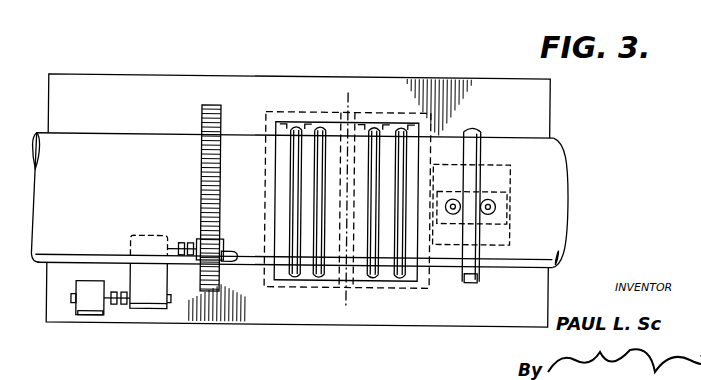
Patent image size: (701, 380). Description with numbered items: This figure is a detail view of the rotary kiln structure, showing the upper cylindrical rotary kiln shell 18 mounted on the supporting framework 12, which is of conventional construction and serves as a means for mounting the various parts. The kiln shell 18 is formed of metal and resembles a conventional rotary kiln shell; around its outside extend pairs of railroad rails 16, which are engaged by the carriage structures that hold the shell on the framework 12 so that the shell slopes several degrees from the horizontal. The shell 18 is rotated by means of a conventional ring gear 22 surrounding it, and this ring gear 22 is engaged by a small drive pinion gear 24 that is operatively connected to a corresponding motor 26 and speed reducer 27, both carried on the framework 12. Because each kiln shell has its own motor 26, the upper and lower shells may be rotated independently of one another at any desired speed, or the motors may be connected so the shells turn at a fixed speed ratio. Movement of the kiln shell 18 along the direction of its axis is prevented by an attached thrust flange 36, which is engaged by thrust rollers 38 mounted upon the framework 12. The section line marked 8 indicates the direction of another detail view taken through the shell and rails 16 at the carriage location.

The supporting framework 12 is at (165, 75).
The upper cylindrical rotary kiln shell 18 is at (149, 134).
The ring gear 22 is at (204, 112).
The drive pinion gear 24 is at (234, 268).
The motor 26 is at (100, 318).
The speed reducer 27 is at (162, 288).
The railroad rails 16 is at (379, 284).
The thrust flange 36 is at (479, 132).
The thrust roller 38 is at (494, 196).
The section line 8- 8 is at (327, 297).